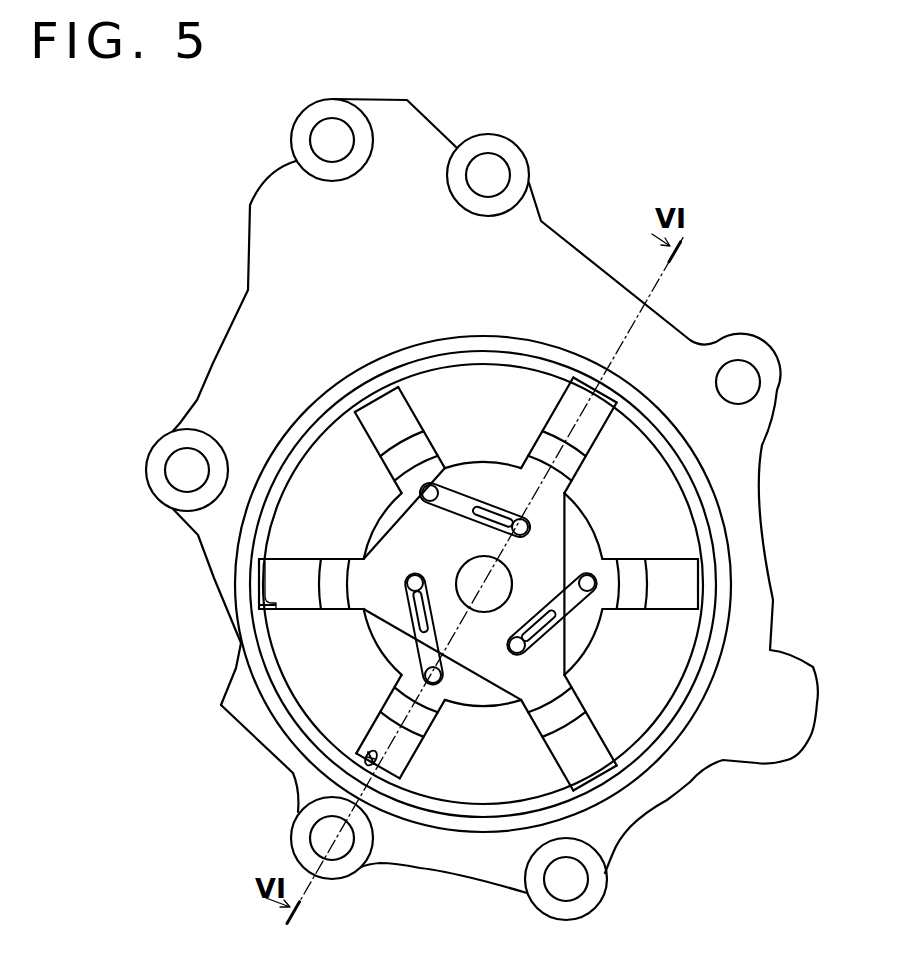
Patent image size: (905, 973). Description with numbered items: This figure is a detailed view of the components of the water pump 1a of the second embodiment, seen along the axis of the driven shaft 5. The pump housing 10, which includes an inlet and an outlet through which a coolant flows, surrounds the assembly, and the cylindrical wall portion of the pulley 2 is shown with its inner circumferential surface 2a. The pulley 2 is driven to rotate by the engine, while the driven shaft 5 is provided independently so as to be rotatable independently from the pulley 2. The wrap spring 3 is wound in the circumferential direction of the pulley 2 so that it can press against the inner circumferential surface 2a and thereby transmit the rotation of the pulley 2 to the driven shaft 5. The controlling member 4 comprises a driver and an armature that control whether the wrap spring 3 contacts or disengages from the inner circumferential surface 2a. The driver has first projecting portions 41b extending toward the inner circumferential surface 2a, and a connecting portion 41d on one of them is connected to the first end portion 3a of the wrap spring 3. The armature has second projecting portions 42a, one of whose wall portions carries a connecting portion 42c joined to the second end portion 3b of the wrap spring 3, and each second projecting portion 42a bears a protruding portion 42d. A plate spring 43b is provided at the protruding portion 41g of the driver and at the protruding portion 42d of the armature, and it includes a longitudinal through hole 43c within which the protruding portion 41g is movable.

The water pump 1a is at (561, 132).
The pump housing 10 is at (672, 365).
The pulley 2 is at (685, 452).
The inner circumferential surface 2a is at (697, 630).
The wrap spring 3 is at (678, 698).
The first end portion 3a is at (258, 602).
The second end portion 3b is at (295, 821).
The controlling member 4 is at (620, 697).
The driven shaft 5 is at (495, 586).
The first projecting portion 41b is at (295, 572).
The connecting portion 41d is at (257, 608).
The protruding portion 41g is at (415, 583).
The second projecting portion 42a is at (378, 423).
The connecting portion 42c is at (357, 767).
The protruding portion 42d is at (428, 488).
The plate spring 43b is at (568, 597).
The longitudinal through hole 43c is at (545, 597).